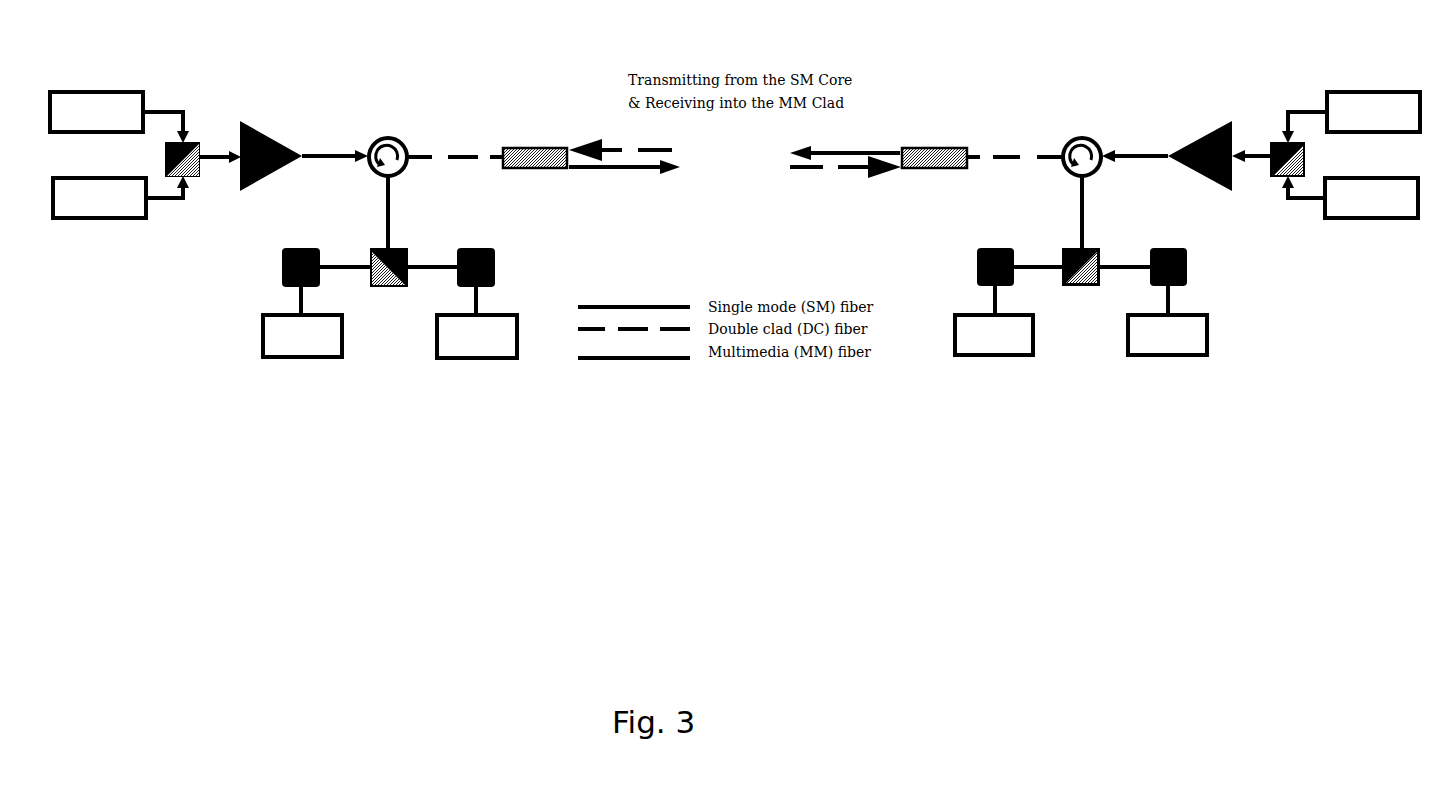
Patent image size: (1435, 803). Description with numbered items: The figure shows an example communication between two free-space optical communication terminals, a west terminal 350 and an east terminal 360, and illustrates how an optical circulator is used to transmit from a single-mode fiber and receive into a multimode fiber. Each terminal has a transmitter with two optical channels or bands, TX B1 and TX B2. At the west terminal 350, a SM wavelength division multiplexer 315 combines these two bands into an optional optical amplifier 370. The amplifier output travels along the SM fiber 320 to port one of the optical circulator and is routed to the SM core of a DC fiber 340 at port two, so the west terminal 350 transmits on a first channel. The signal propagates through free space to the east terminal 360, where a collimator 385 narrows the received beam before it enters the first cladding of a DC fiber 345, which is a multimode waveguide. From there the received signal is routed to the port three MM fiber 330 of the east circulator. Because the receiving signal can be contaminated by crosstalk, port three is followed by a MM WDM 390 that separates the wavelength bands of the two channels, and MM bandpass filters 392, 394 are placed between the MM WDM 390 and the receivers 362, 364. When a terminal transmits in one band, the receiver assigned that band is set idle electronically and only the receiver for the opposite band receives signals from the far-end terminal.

The west terminal 350 is at (365, 193).
The east terminal 360 is at (1105, 224).
The SM wavelength division multiplexer 315 is at (196, 181).
The optical amplifier 370 is at (274, 134).
The SM fiber 320 is at (307, 160).
The DC fiber 340 is at (472, 151).
The collimator 385 is at (940, 147).
The DC fiber 345 is at (1000, 150).
The MM fiber 330 is at (1083, 222).
The MM WDM 390 is at (1090, 288).
The MM bandpass filter 392 is at (975, 250).
The MM bandpass filter 394 is at (1188, 280).
The receiver 362 is at (953, 353).
The receiver 364 is at (1190, 357).